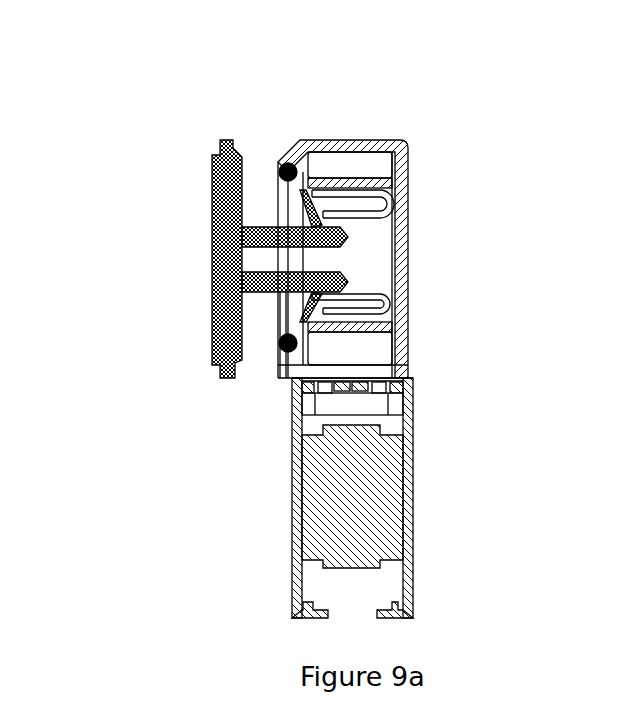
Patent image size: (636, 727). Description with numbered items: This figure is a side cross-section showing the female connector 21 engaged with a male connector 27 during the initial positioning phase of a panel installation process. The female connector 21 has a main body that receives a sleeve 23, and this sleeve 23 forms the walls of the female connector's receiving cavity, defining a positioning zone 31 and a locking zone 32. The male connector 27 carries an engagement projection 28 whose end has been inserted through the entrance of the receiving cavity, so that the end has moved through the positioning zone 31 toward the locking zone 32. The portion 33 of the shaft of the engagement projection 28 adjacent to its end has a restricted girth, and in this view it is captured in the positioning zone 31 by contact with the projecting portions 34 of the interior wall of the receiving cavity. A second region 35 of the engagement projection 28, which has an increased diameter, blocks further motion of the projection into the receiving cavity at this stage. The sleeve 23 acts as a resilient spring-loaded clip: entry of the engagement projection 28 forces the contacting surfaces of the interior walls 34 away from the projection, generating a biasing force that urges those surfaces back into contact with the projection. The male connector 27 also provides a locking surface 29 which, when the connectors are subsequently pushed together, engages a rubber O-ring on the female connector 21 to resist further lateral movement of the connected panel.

The female connector 21 is at (435, 472).
The sleeve 23 is at (408, 162).
The male connector 27 is at (192, 243).
The engagement projection 28 is at (212, 237).
The locking surface 29 is at (212, 158).
The positioning zone 31 is at (283, 165).
The locking zone 32 is at (353, 224).
The portion of the shaft 33 is at (328, 296).
The projecting portions of interior wall 34 is at (322, 227).
The second region 35 is at (283, 292).